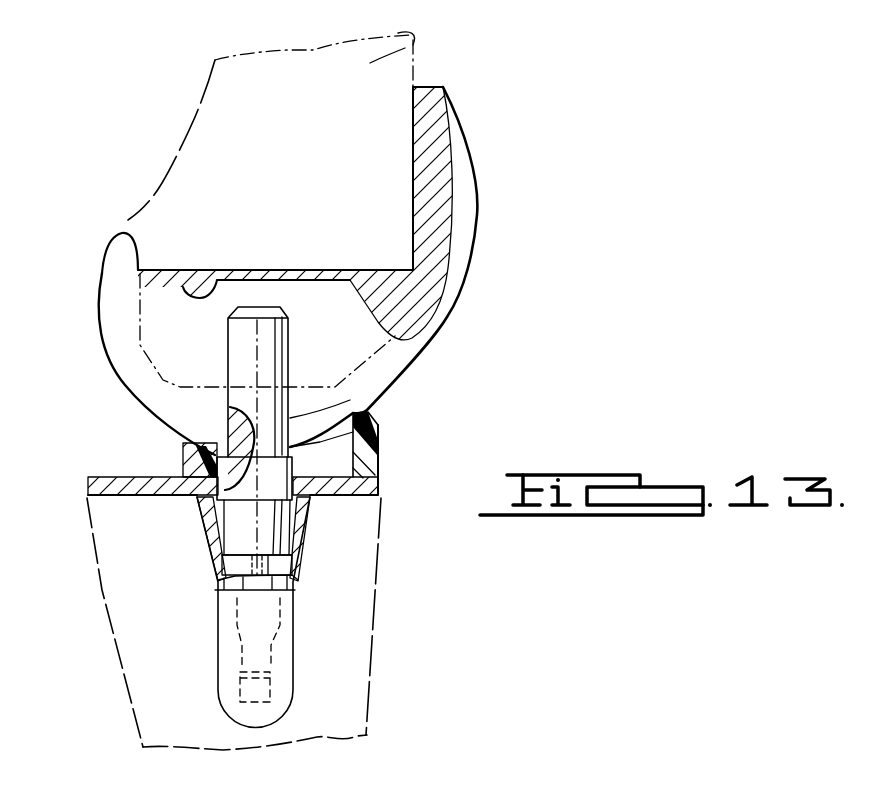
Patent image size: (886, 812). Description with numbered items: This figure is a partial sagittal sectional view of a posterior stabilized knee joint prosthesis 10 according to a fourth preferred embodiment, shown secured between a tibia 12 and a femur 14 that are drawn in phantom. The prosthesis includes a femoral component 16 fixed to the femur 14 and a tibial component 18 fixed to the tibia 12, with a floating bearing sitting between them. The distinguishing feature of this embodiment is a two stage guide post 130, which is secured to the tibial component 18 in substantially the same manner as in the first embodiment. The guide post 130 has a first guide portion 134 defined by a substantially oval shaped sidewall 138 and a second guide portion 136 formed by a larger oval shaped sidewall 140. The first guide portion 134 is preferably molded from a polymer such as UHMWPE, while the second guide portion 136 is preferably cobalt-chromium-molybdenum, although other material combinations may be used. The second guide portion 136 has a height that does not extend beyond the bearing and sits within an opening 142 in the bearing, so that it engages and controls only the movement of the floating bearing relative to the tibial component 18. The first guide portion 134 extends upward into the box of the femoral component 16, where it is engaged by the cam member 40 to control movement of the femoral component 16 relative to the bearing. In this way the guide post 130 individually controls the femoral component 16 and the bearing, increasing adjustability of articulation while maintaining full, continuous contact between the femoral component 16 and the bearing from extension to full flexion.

The knee joint prosthesis 10 is at (517, 160).
The tibia 12 is at (356, 669).
The femur 14 is at (427, 37).
The femoral component 16 is at (478, 221).
The tibial component 18 is at (375, 484).
The cam member 40 is at (195, 285).
The guide post 130 is at (350, 400).
The first guide portion 134 is at (227, 366).
The second guide portion 136 is at (380, 445).
The oval shaped sidewall 138 is at (288, 363).
The oval shaped sidewall 140 is at (183, 458).
The opening 142 is at (212, 442).